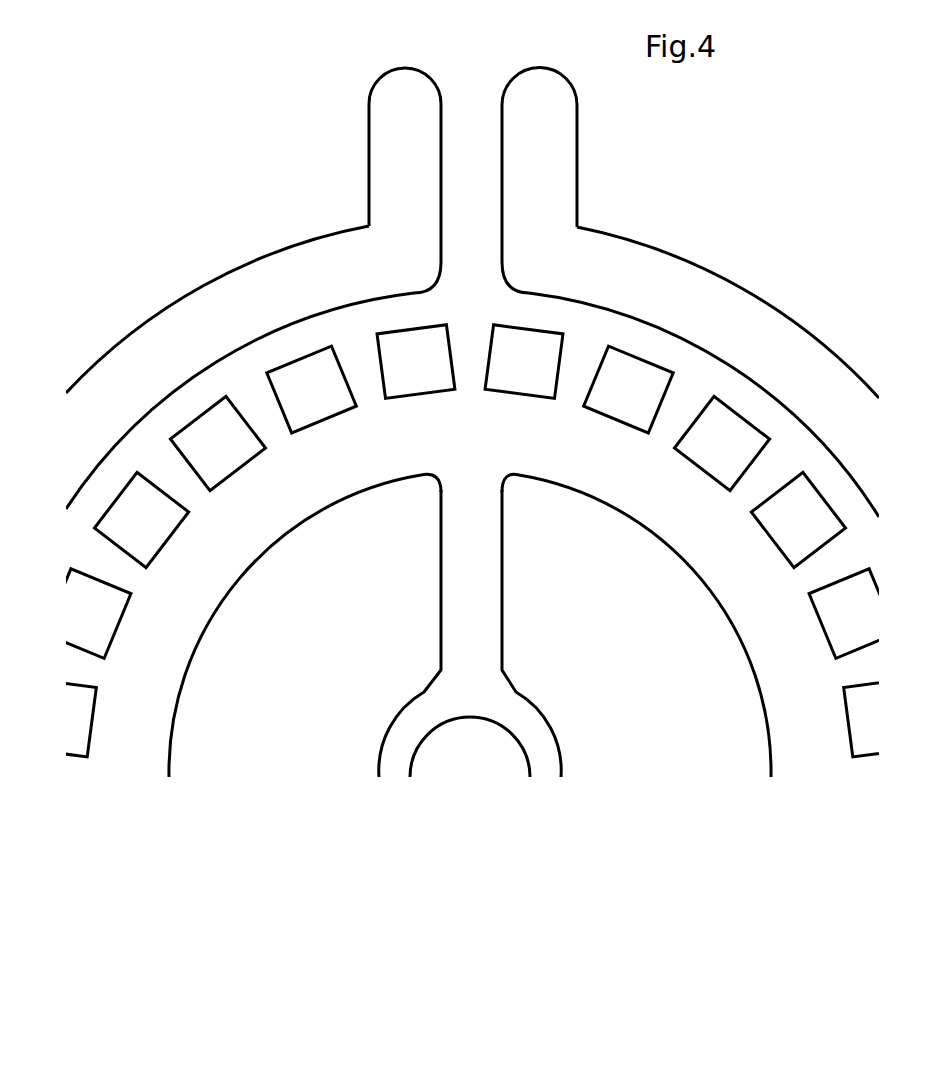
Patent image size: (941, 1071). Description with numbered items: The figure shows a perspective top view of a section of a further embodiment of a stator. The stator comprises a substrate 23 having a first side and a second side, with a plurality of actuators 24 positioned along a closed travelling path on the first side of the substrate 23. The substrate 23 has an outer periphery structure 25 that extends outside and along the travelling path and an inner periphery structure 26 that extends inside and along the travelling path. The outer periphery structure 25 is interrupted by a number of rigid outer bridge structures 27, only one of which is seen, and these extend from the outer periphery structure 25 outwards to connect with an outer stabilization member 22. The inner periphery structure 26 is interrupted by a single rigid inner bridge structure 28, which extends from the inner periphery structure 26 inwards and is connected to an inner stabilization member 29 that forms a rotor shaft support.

The outer stabilization member 22 is at (176, 177).
The substrate 23 is at (326, 486).
The actuators 24 is at (538, 340).
The outer periphery structure 25 is at (795, 407).
The inner periphery structure 26 is at (236, 596).
The rigid outer bridge structures 27 is at (475, 145).
The rigid inner bridge structure 28 is at (480, 593).
The inner stabilization member 29 is at (536, 728).